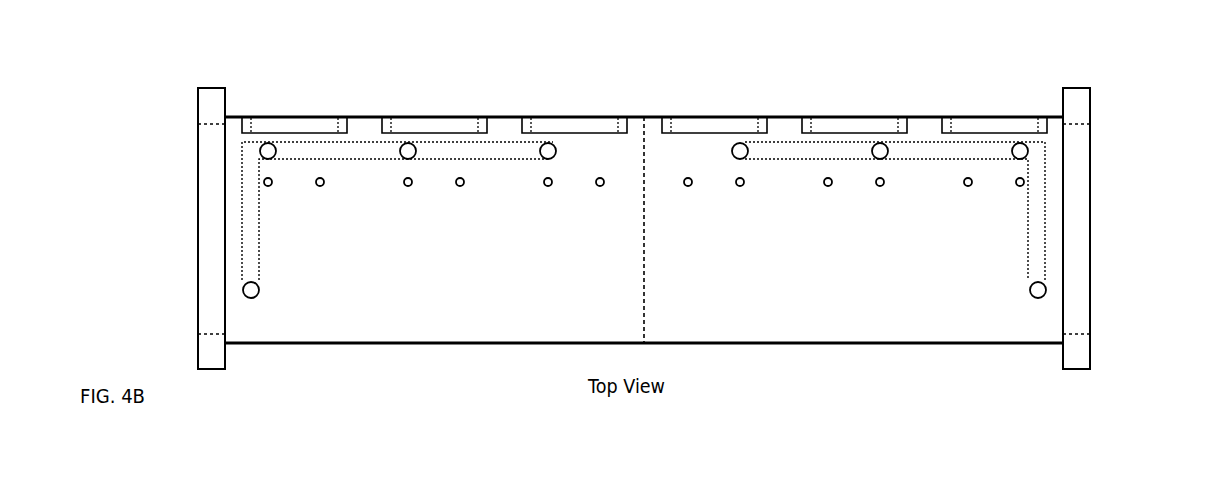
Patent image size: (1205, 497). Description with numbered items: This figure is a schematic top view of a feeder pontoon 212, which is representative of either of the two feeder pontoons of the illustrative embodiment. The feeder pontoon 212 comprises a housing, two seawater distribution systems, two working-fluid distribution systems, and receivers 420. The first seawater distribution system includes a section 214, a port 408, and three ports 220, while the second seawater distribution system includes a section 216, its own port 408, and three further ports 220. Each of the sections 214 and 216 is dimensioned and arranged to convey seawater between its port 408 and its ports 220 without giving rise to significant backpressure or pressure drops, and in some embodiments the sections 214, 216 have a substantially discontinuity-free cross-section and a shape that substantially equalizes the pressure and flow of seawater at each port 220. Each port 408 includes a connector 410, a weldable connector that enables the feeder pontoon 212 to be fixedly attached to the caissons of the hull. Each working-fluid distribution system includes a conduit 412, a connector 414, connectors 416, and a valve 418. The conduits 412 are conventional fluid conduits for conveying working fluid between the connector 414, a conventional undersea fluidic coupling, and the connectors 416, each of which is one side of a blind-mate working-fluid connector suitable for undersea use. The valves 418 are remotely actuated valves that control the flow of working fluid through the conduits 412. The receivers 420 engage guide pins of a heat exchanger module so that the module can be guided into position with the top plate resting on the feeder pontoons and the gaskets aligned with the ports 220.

The feeder pontoon 212 is at (128, 59).
The section 214 is at (572, 327).
The section 216 is at (723, 327).
The port 220 is at (303, 103).
The port 408 is at (207, 230).
The connector 410 is at (198, 107).
The conduit 412 is at (251, 255).
The connector 414 is at (259, 286).
The connector 416 is at (275, 153).
The valve 418 is at (1030, 288).
The receiver 420 is at (600, 200).